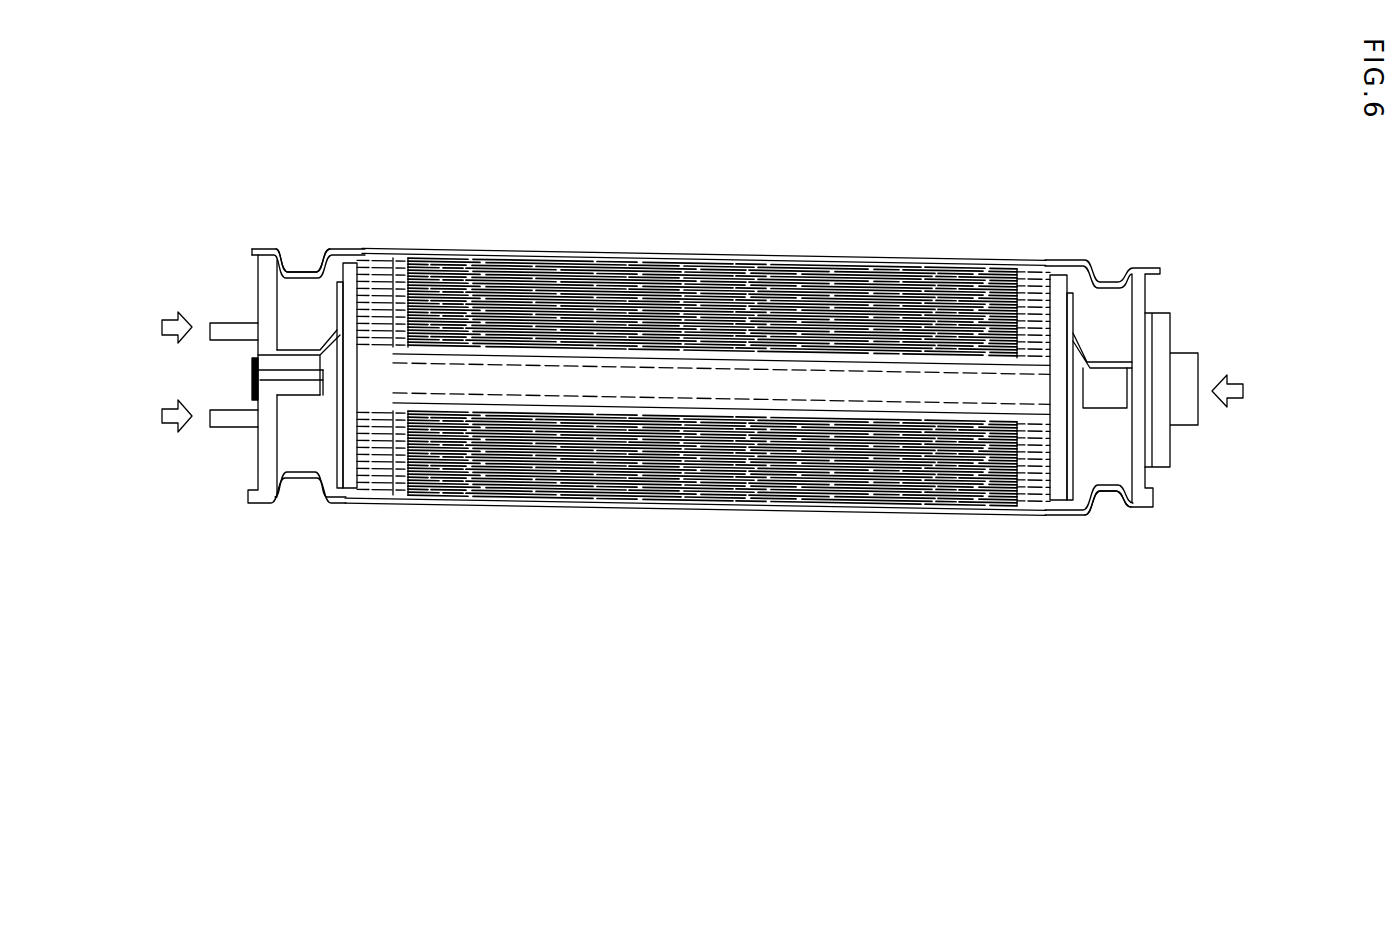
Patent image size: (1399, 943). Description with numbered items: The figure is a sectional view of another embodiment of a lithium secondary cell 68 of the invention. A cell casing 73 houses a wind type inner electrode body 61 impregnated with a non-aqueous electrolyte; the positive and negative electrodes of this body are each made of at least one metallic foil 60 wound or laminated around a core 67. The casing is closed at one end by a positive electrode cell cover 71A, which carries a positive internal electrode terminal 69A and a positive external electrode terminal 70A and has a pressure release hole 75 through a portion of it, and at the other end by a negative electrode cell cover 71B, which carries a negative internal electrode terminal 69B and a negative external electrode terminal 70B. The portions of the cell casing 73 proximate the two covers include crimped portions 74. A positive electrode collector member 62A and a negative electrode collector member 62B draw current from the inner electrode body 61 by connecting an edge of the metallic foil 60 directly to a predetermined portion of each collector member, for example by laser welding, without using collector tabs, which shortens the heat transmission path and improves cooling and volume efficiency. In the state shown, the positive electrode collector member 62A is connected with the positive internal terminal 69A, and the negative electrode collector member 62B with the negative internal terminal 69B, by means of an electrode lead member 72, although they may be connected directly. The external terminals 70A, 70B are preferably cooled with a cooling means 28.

The cooling means 28 is at (697, 372).
The metallic foil 60 is at (363, 475).
The inner electrode body 61 is at (652, 468).
The positive electrode collector member 62A is at (353, 293).
The negative electrode collector member 62B is at (1053, 483).
The core 67 is at (597, 363).
The lithium secondary cell 68 is at (748, 237).
The positive internal electrode terminal 69A is at (293, 388).
The negative internal electrode terminal 69B is at (1103, 385).
The positive external electrode terminal 70A is at (222, 422).
The negative external electrode terminal 70B is at (1182, 408).
The positive electrode cell cover 71A is at (263, 462).
The negative electrode cell cover 71B is at (1135, 490).
The electrode lead member 72 is at (322, 343).
The cell casing 73 is at (763, 508).
The crimped portion 74 is at (298, 258).
The pressure release hole 75 is at (250, 375).